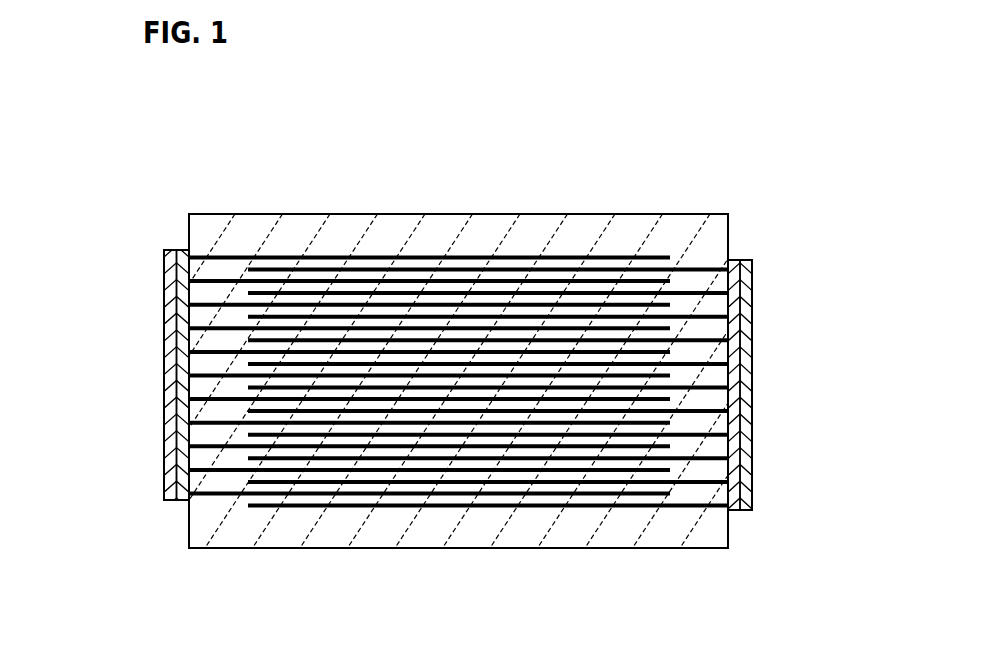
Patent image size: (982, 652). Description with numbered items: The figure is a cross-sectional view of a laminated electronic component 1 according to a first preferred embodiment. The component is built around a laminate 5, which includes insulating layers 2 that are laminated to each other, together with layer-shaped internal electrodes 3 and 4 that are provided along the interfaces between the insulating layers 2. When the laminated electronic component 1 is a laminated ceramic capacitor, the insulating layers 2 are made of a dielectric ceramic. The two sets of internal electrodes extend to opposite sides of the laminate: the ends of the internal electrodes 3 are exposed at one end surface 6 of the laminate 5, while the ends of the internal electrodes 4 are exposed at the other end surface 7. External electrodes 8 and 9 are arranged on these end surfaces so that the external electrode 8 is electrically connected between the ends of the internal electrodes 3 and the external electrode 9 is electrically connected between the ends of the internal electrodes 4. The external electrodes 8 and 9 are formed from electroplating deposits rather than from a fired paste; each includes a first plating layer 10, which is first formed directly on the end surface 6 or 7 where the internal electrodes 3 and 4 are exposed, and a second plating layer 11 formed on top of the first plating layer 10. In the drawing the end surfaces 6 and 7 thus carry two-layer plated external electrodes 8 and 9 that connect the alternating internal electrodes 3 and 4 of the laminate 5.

The laminated electronic component 1 is at (182, 122).
The insulating layers 2 is at (418, 487).
The internal electrodes 3 is at (385, 280).
The internal electrodes 4 is at (482, 288).
The laminate 5 is at (619, 200).
The one end surface 6 is at (177, 412).
The other end surface 7 is at (740, 416).
The external electrode 8 is at (80, 275).
The external electrode 9 is at (837, 253).
The first plating layers 10 is at (177, 293).
The second plating layers 11 is at (176, 333).